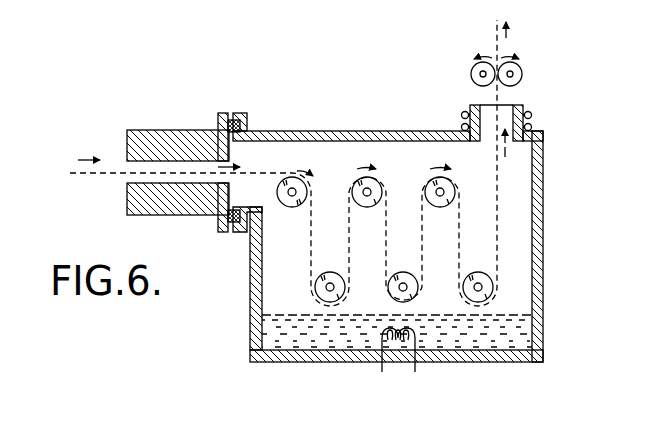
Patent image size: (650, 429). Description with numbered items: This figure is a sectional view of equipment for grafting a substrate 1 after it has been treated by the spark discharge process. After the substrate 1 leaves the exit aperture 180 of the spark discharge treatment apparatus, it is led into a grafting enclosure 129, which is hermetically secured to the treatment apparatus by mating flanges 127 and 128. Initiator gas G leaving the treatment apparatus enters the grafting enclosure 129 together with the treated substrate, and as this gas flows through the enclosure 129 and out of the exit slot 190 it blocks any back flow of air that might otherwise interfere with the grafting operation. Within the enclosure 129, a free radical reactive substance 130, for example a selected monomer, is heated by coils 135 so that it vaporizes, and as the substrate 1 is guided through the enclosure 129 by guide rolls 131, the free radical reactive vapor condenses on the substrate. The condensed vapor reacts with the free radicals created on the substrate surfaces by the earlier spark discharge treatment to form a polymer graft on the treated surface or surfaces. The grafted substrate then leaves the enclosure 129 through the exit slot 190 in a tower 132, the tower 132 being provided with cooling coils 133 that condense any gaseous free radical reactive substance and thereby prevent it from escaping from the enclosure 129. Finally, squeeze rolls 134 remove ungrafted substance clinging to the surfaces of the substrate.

The substrate 1 is at (83, 172).
The mating flange 127 is at (219, 115).
The mating flange 128 is at (247, 116).
The grafting enclosure 129 is at (258, 282).
The free radical reactive substance 130 is at (522, 335).
The guide rolls 131 is at (304, 187).
The tower 132 is at (473, 106).
The cooling coils 133 is at (532, 126).
The squeeze rolls 134 is at (531, 74).
The coils 135 is at (381, 368).
The exit aperture 180 is at (228, 177).
The exit slot 190 is at (507, 108).
The initiator gas G is at (231, 177).